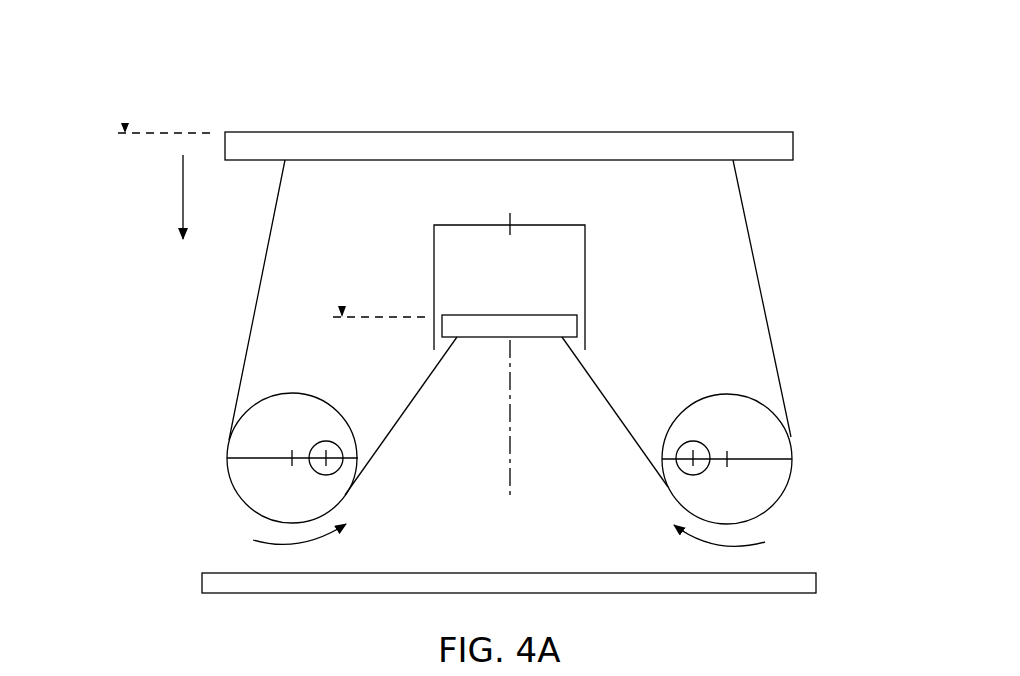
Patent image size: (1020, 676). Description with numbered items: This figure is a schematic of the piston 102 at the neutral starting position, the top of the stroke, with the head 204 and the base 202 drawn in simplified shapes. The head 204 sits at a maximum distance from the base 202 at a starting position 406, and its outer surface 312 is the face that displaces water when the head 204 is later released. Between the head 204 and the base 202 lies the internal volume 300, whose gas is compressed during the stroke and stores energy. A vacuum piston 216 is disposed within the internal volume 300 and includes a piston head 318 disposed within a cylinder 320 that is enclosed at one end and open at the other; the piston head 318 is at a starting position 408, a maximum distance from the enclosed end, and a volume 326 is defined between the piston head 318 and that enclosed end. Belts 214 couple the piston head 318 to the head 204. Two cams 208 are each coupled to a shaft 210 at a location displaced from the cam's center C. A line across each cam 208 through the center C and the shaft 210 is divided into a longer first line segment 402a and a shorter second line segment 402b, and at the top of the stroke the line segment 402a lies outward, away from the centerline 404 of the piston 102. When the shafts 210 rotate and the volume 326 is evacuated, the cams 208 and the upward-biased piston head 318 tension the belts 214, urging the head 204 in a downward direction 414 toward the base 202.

The piston 102 is at (117, 66).
The base 202 is at (806, 580).
The head 204 is at (782, 146).
The cams 208 is at (247, 410).
The shafts 210 is at (335, 441).
The belts 214 is at (257, 300).
The vacuum piston 216 is at (551, 223).
The internal volume 300 is at (367, 245).
The outer surface 312 is at (551, 130).
The piston head 318 is at (483, 326).
The cylinder 320 is at (465, 225).
The volume 326 is at (528, 277).
The first line segment 402a is at (258, 460).
The second line segment 402b is at (358, 468).
The centerline 404 is at (512, 435).
The starting position 406 is at (168, 133).
The starting position 408 is at (385, 316).
The direction 414 is at (183, 187).
The center C is at (291, 450).